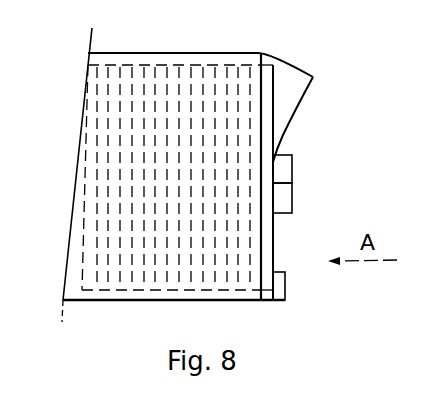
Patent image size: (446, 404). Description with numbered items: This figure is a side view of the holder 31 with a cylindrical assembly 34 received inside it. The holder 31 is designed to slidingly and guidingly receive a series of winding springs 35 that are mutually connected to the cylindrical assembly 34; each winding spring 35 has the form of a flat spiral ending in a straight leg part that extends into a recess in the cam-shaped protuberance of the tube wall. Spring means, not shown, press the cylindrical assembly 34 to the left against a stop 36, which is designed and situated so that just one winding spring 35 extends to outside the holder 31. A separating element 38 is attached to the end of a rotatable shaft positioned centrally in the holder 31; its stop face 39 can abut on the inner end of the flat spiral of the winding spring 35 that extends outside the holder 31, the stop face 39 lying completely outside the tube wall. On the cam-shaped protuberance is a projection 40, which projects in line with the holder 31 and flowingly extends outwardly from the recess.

The holder 31 is at (126, 310).
The cylindrical assembly 34 is at (76, 112).
The winding spring 35 is at (265, 83).
The stop 36 is at (278, 288).
The separating element 38 is at (282, 202).
The stop face 39 is at (288, 178).
The projection 40 is at (290, 95).